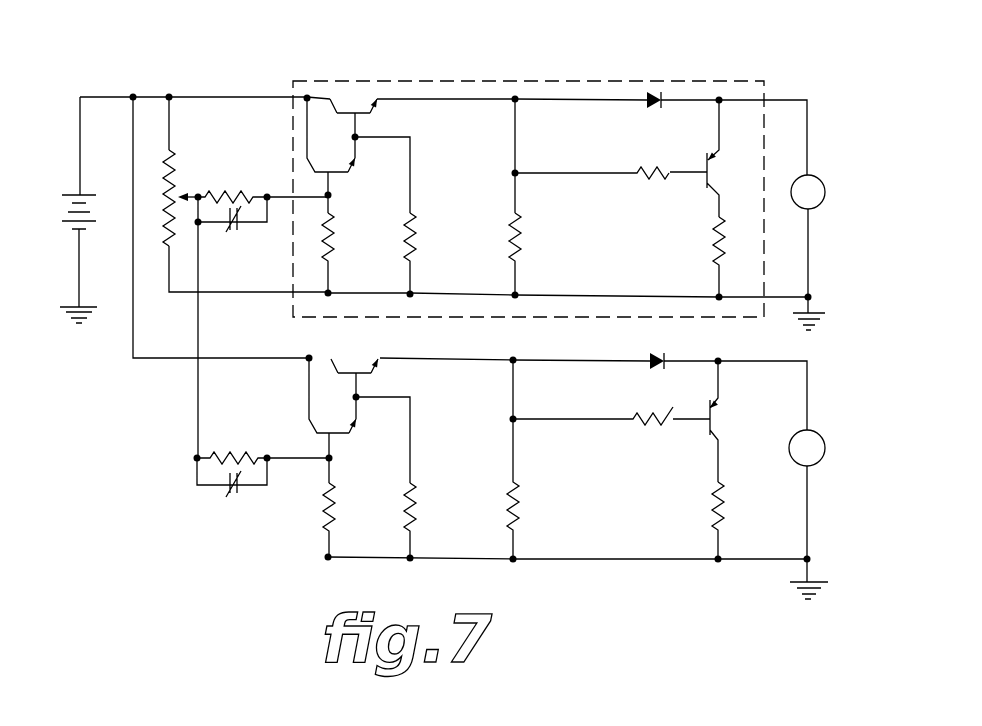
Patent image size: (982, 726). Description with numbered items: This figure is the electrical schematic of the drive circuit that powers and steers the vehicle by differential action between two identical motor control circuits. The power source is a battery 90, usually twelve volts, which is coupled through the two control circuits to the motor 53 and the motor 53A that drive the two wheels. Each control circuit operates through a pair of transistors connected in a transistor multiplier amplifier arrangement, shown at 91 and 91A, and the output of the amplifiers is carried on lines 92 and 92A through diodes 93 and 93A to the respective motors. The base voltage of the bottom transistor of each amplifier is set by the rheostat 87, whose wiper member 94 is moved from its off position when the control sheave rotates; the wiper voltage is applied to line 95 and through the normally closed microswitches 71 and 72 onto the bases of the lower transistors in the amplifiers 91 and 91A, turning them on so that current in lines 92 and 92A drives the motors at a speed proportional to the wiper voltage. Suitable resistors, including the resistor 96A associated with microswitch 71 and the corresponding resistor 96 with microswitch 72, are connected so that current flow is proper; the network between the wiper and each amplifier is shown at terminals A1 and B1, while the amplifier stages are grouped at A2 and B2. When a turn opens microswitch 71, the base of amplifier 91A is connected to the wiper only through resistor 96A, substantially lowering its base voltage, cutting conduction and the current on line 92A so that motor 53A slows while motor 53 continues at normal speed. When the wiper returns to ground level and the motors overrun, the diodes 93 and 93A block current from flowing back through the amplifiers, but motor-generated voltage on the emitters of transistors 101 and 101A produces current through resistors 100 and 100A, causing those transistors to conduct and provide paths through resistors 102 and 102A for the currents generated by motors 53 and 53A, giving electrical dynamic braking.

The battery 90 is at (57, 210).
The rheostat 87 is at (172, 168).
The wiper member 94 is at (181, 196).
The resistor 96A is at (246, 193).
The terminal A1 is at (268, 197).
The microswitch 71 is at (228, 228).
The line 95 is at (197, 234).
The control circuit A2 is at (268, 97).
The transistor multiplier amplifier 91A is at (362, 136).
The line 92A is at (556, 98).
The diode 93A is at (655, 95).
The transistor 101A is at (715, 183).
The resistor 100A is at (655, 177).
The resistor 102A is at (727, 230).
The motor 53A is at (818, 178).
The terminal B2 is at (252, 357).
The transistor multiplier amplifier 91 is at (350, 372).
The line 92 is at (540, 361).
The diode 93 is at (667, 354).
The transistor 101 is at (713, 425).
The resistor 100 is at (642, 425).
The resistor 102 is at (725, 513).
The motor 53 is at (818, 432).
The resistor 96 is at (225, 456).
The terminal B1 is at (278, 456).
The microswitch 72 is at (237, 492).